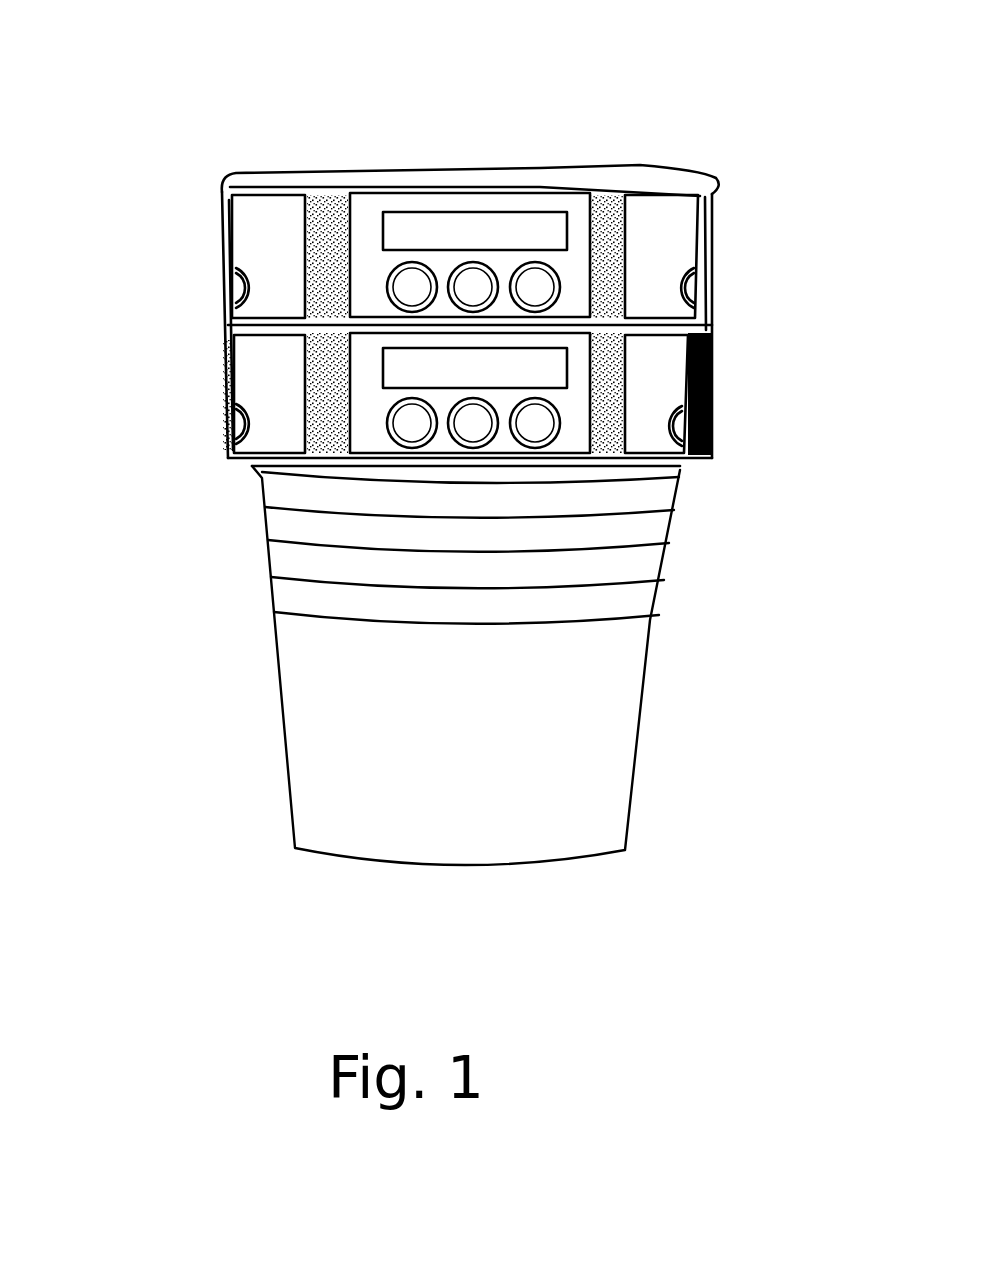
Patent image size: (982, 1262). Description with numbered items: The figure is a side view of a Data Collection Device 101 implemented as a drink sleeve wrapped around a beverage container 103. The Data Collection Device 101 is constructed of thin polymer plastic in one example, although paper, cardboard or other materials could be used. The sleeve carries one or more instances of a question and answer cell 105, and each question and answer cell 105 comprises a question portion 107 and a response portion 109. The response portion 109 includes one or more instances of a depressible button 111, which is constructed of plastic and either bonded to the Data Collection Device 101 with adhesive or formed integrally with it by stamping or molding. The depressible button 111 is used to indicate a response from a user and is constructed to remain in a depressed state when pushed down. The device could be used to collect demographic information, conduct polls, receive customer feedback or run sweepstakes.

The Data Collection Device (DCD) 101 is at (712, 407).
The beverage container 103 is at (633, 790).
The question and answer cell 105 is at (363, 213).
The question portion 107 is at (503, 230).
The response portion 109 is at (374, 290).
The depressible button 111 is at (594, 213).